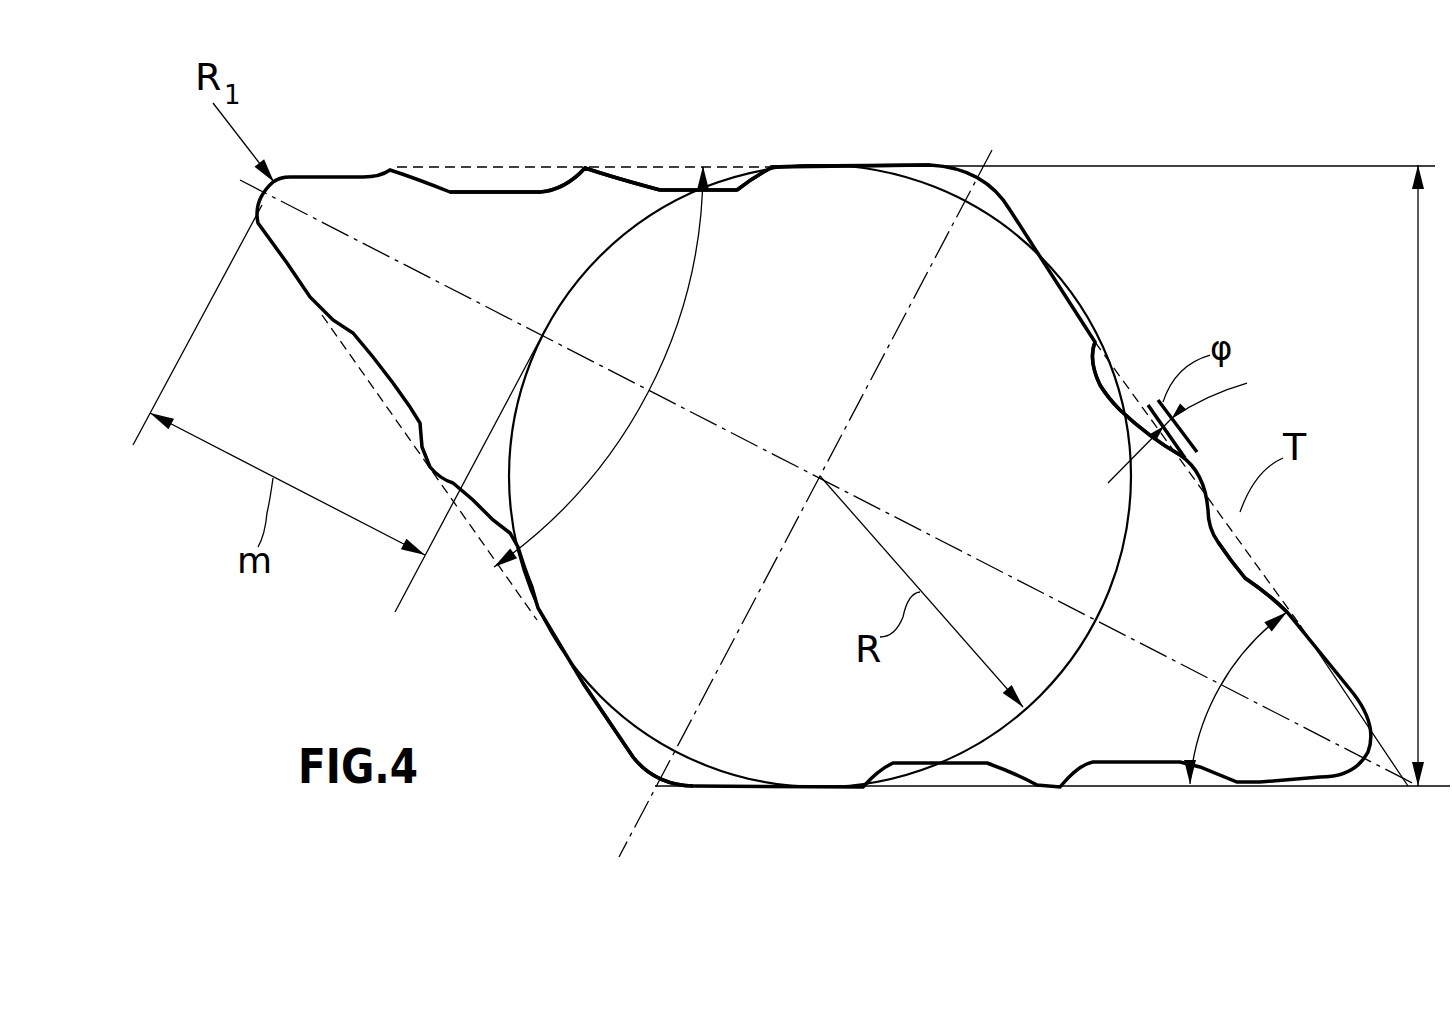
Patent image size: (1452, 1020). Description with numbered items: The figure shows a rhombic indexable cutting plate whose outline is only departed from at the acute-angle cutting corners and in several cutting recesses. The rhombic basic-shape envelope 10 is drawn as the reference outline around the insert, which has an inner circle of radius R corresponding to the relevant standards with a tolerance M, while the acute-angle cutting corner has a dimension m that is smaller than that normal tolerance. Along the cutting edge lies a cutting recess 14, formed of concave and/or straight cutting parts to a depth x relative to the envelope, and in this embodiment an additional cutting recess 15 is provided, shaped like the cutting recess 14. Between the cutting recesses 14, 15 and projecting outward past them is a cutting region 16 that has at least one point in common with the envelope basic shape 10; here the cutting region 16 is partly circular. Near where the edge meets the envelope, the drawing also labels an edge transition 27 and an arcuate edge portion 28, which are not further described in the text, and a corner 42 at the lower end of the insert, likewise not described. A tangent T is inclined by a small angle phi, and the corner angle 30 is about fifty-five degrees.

The basic-shape envelope 10 is at (423, 168).
The cutting recess 14 is at (497, 192).
The additional cutting recess 15 is at (655, 190).
The cutting region 16 is at (585, 168).
The cutting edge transition 27 is at (787, 165).
The arcuate cutting edge 28 is at (827, 165).
The corner angle 30 is at (680, 327).
The corner 42 is at (638, 770).